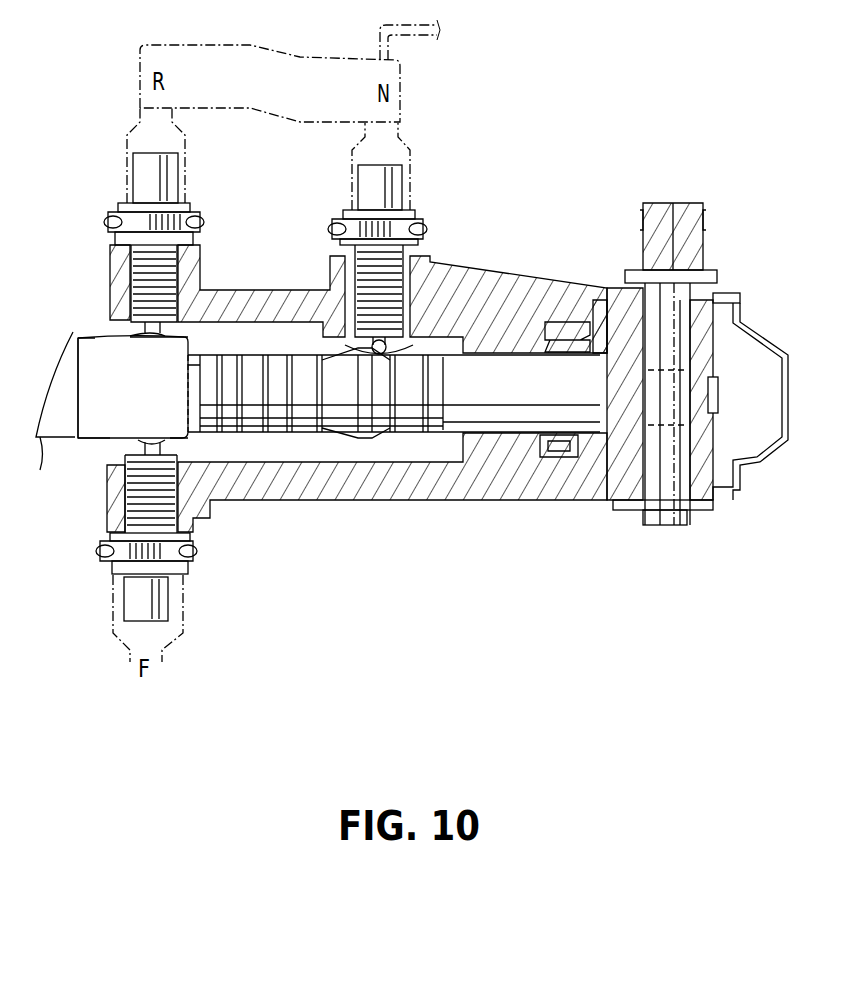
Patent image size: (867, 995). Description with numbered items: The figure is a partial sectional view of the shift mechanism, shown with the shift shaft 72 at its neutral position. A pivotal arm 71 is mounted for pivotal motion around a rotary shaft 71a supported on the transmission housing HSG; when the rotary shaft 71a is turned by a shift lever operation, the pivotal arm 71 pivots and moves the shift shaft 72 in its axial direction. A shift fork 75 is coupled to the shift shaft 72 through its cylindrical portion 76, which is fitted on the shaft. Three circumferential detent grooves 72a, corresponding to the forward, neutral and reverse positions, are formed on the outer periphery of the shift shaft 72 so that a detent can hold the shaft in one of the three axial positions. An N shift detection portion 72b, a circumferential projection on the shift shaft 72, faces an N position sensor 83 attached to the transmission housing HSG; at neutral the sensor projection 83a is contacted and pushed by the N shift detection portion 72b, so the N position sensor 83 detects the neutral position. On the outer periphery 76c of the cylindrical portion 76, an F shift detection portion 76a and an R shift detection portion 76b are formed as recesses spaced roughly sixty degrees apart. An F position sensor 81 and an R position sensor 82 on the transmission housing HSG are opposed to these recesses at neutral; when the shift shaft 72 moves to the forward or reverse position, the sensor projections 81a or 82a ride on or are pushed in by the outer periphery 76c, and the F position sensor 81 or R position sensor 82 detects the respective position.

The pivotal arm 71 is at (700, 435).
The rotary shaft 71a is at (707, 245).
The shift shaft 72 is at (497, 410).
The detent grooves 72a is at (282, 428).
The N shift detection portion 72b is at (380, 430).
The shift fork 75 is at (72, 447).
The cylindrical portion 76 is at (93, 438).
The F shift detection portion 76a is at (112, 462).
The R shift detection portion 76b is at (187, 337).
The outer periphery 76c is at (93, 337).
The F position sensor 81 is at (188, 573).
The sensor projection 81a is at (148, 437).
The R position sensor 82 is at (195, 207).
The sensor projection 82a is at (140, 347).
The N position sensor 83 is at (410, 215).
The sensor projection 83a is at (395, 340).
The transmission housing HSG is at (536, 302).